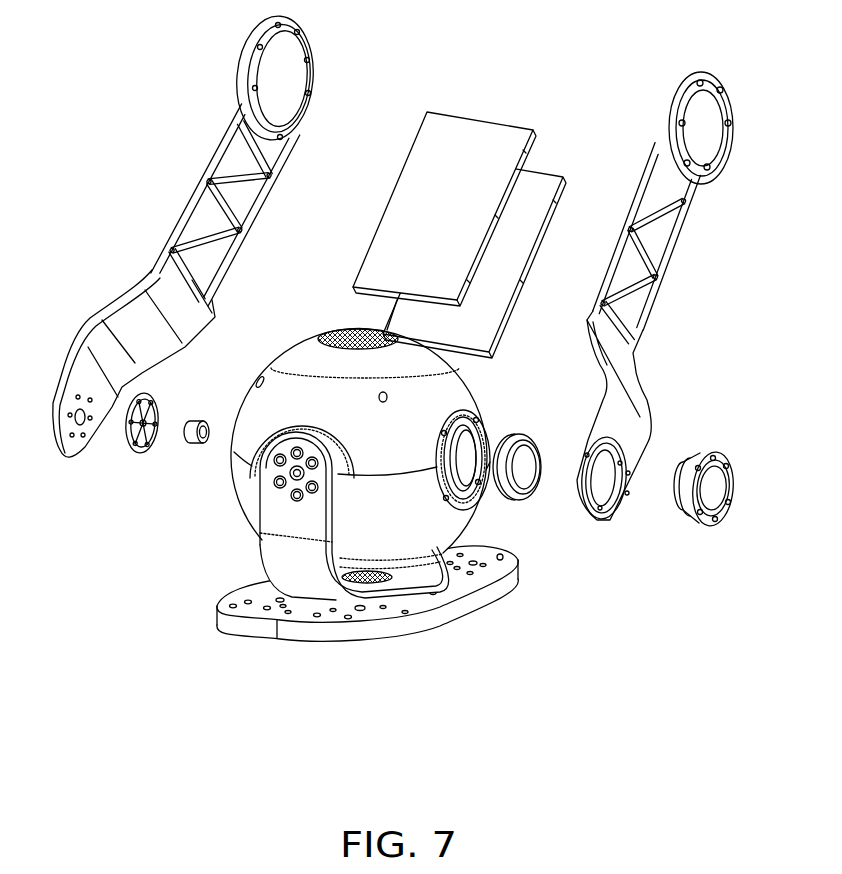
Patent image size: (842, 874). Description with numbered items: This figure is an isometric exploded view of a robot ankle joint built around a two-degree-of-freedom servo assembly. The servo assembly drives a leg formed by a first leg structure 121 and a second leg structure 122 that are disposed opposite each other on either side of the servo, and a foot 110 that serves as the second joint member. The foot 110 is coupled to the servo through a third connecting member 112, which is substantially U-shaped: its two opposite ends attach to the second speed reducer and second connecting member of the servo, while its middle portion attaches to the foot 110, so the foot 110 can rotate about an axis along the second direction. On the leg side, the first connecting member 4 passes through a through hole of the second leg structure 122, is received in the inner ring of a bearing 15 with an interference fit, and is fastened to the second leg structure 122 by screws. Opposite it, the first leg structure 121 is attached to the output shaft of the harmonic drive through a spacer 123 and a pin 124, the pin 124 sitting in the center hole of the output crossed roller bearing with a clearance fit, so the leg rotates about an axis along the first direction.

The first connecting member 4 is at (683, 518).
The bearing 15 is at (517, 433).
The foot 110 is at (428, 620).
The third connecting member 112 is at (265, 550).
The first leg structure 121 is at (237, 97).
The second leg structure 122 is at (687, 237).
The spacer 123 is at (131, 450).
The pin 124 is at (203, 420).